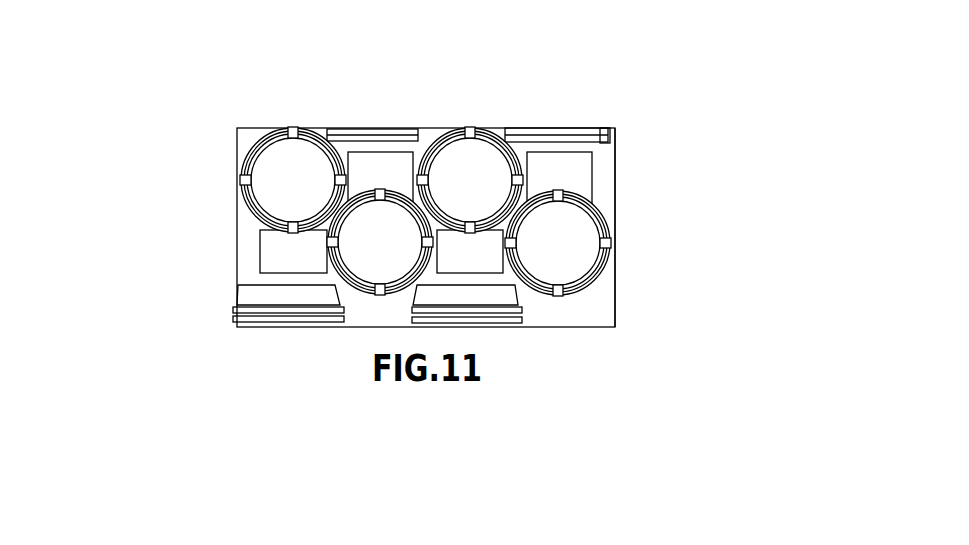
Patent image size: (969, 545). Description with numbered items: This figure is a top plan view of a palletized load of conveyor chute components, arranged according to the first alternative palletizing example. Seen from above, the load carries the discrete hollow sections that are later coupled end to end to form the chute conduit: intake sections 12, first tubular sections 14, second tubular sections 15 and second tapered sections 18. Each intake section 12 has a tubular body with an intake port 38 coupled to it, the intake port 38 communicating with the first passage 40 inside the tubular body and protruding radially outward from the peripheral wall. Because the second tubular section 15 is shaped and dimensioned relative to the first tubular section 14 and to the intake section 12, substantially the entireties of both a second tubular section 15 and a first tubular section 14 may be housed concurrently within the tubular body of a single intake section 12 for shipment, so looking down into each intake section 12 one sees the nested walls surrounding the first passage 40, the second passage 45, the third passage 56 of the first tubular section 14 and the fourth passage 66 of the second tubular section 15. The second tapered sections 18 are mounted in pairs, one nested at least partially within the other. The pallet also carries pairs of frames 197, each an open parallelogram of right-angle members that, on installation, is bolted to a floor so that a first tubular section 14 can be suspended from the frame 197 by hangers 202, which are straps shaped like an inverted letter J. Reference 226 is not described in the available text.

The intake section 12 is at (469, 267).
The first tubular section 14 is at (489, 267).
The second tubular section 15 is at (428, 249).
The second tapered section 18 is at (257, 296).
The intake port 38 is at (392, 183).
The first passage 40 is at (425, 211).
The second passage 45 is at (437, 140).
The third passage 56 is at (425, 211).
The fourth passage 66 is at (446, 136).
The frame 197 is at (382, 133).
The hanger 202 is at (290, 128).
The housing side wall 226 is at (603, 178).